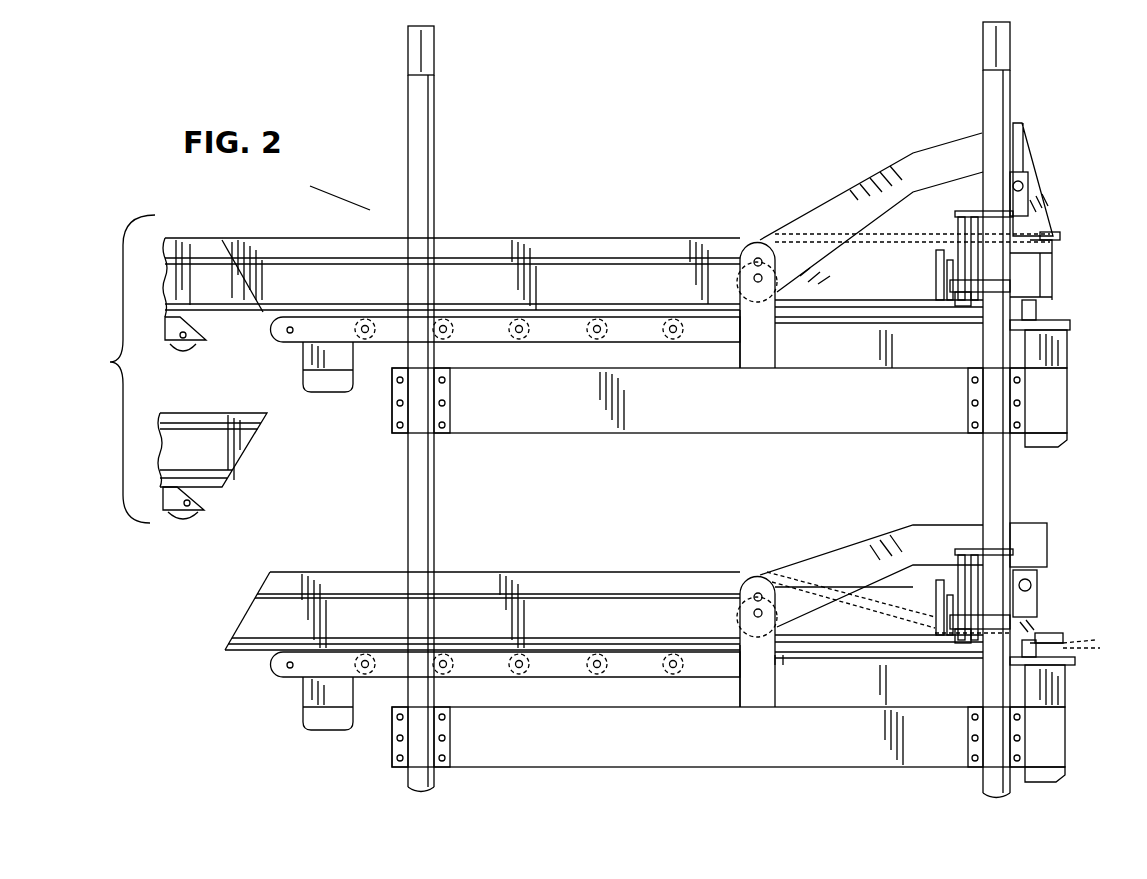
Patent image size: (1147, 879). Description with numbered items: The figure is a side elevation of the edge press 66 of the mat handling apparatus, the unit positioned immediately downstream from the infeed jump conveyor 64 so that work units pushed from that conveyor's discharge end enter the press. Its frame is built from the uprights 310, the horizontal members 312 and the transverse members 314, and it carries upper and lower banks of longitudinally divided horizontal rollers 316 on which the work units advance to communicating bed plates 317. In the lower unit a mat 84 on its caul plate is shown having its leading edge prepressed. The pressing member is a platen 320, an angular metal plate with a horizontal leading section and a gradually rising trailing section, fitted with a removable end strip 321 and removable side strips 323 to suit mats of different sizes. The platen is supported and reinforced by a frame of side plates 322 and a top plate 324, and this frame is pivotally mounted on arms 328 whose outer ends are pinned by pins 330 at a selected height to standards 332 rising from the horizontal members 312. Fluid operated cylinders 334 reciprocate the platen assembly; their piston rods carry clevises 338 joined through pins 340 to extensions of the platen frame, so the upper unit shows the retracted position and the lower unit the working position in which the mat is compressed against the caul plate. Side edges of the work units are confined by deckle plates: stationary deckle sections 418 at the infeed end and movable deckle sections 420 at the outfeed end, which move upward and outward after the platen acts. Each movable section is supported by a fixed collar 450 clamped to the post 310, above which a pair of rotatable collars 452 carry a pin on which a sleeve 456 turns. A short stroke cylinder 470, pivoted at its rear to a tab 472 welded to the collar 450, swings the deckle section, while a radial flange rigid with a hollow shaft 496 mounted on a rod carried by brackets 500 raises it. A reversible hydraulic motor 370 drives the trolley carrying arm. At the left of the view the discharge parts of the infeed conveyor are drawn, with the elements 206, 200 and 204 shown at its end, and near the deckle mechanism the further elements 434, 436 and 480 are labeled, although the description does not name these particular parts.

The infeed jump conveyor 64 is at (100, 367).
The edge press 66 is at (372, 211).
The mat 84 is at (1078, 652).
The roller bracket 200 is at (194, 336).
The roller 204 is at (186, 348).
The carrier side plate 206 is at (203, 250).
The uprights 310 is at (436, 498).
The horizontal members 312 is at (598, 436).
The transverse members 314 is at (436, 38).
The horizontal rollers 316 is at (575, 357).
The bed plates 317 is at (1072, 325).
The platen 320 is at (760, 246).
The end strip 321 is at (1058, 232).
The side plates 322 is at (912, 208).
The side strips 323 is at (1052, 238).
The top plate 324 is at (980, 132).
The arms 328 is at (897, 160).
The pins 330 is at (750, 280).
The standards 332 is at (761, 369).
The fluid operated cylinders 334 is at (1026, 348).
The clevises 338 is at (1022, 210).
The pins 340 is at (1014, 200).
The reversible hydraulic motor 370 is at (350, 392).
The stationary deckle sections 418 is at (548, 238).
The movable deckle sections 420 is at (832, 272).
The guide rail 434 is at (1052, 254).
The lower frame channel 436 is at (836, 320).
The fixed collar 450 is at (1046, 300).
The rotatable collars 452 is at (975, 213).
The sleeve 456 is at (958, 228).
The fluid operated cylinder 470 is at (955, 305).
The tab 472 is at (970, 310).
The guide plate 480 is at (932, 268).
The hollow shaft 496 is at (838, 304).
The brackets 500 is at (932, 286).